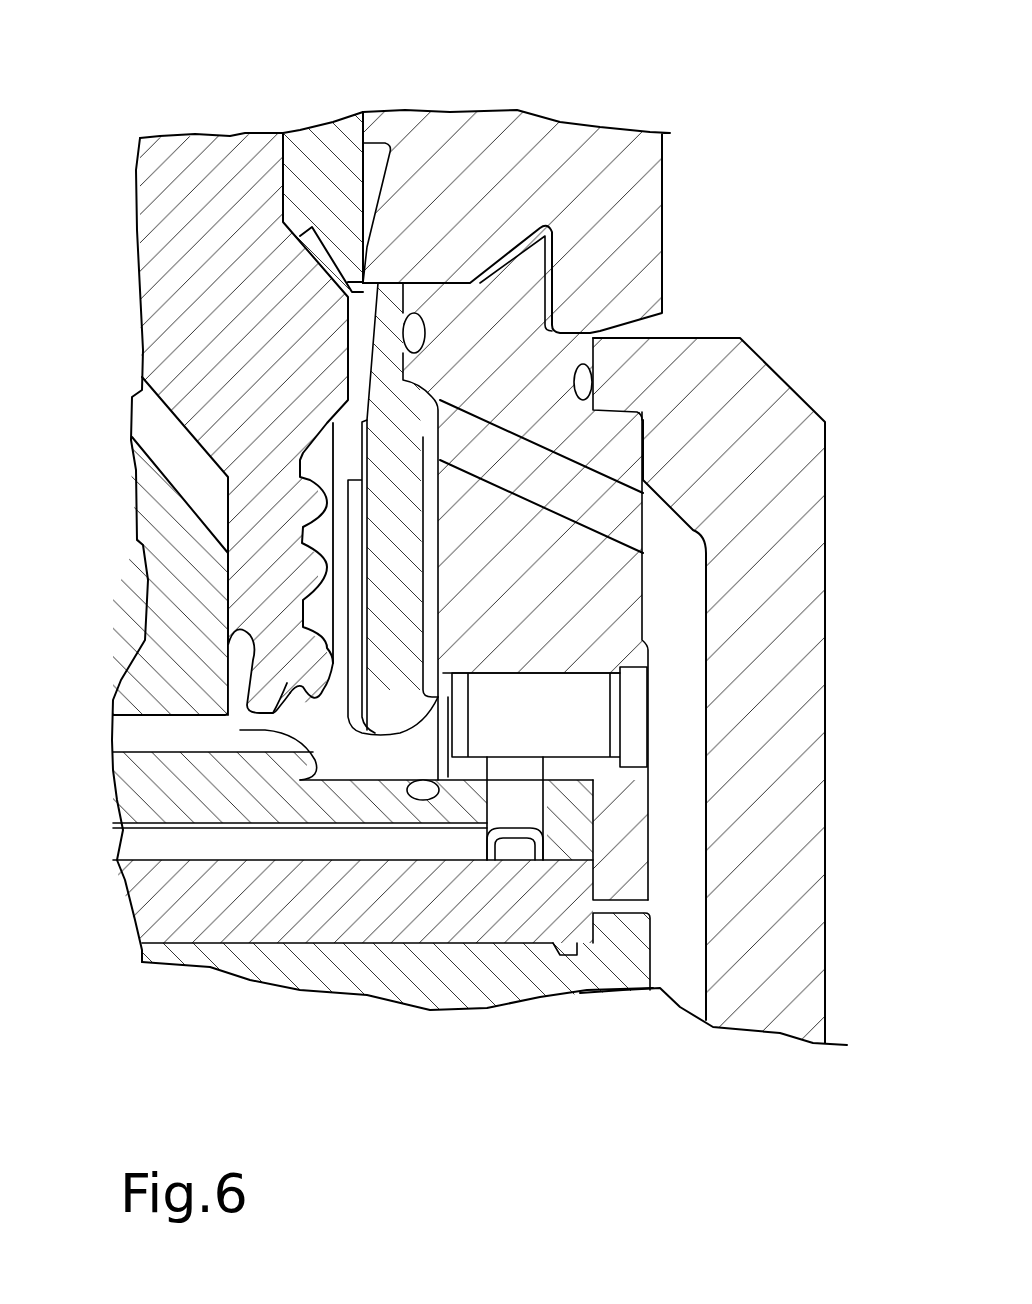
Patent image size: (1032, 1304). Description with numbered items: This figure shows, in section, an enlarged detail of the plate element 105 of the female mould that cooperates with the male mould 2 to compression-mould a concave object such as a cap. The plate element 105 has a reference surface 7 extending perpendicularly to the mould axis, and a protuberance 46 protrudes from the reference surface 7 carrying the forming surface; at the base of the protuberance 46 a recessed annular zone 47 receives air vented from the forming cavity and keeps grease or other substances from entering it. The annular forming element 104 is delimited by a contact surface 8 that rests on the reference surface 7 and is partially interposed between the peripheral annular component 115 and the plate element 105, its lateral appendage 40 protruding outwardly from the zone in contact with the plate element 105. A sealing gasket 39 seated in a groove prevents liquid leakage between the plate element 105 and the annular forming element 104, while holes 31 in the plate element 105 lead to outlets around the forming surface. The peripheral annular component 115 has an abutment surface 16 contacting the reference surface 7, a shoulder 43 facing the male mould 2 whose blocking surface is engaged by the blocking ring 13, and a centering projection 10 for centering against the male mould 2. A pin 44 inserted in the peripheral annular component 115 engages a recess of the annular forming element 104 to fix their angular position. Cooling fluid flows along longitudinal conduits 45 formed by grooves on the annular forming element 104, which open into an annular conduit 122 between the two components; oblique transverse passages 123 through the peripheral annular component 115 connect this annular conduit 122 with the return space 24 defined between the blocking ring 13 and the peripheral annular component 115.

The male mould 2 is at (163, 380).
The reference surface 7 is at (260, 730).
The contact surface 8 is at (393, 827).
The centering projection 10 is at (513, 262).
The blocking ring 13 is at (810, 475).
The abutment surface 16 is at (567, 783).
The return space 24 is at (683, 937).
The holes 31 is at (490, 800).
The sealing gasket 39 is at (420, 800).
The lateral appendage 40 is at (467, 770).
The shoulder 43 is at (578, 495).
The pin 44 is at (557, 712).
The longitudinal conduits 45 is at (430, 597).
The protuberance 46 is at (320, 762).
The annular zone 47 is at (293, 780).
The annular forming element 104 is at (390, 530).
The plate element 105 is at (143, 787).
The peripheral annular component 115 is at (590, 593).
The annular conduit 122 is at (423, 407).
The transverse passages 123 is at (572, 497).